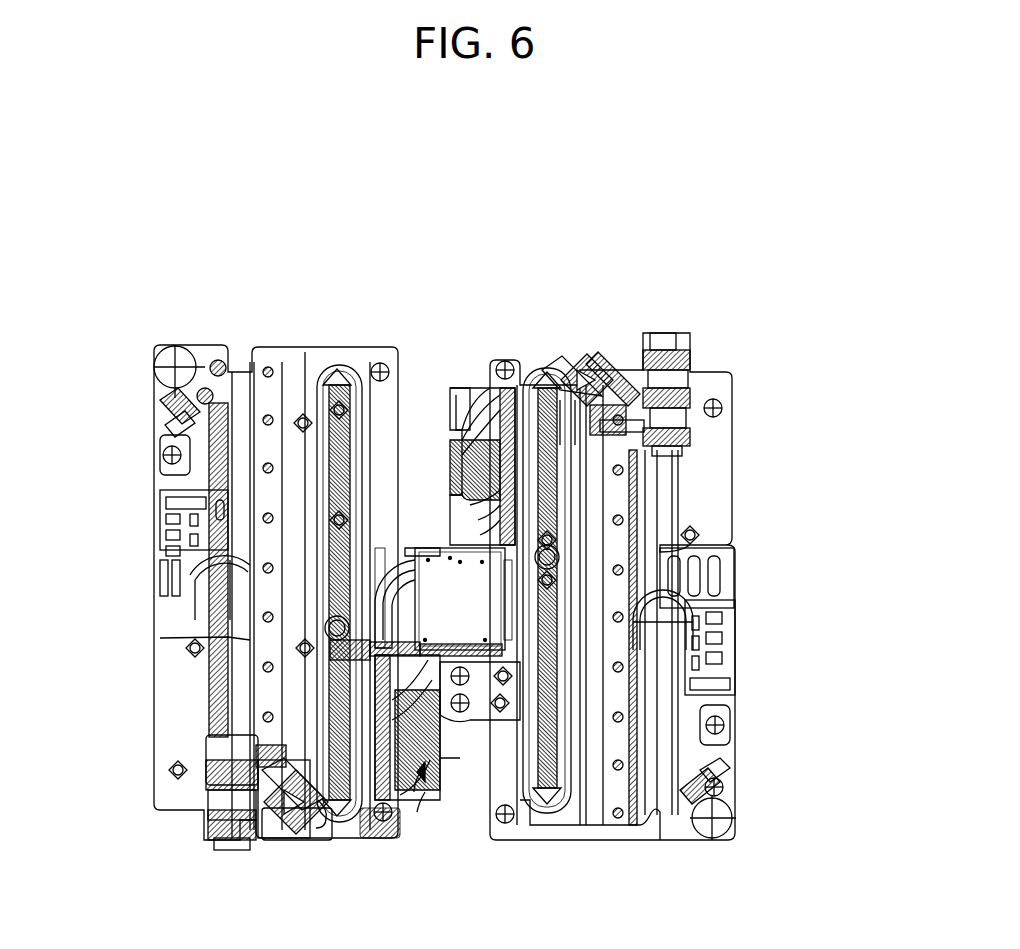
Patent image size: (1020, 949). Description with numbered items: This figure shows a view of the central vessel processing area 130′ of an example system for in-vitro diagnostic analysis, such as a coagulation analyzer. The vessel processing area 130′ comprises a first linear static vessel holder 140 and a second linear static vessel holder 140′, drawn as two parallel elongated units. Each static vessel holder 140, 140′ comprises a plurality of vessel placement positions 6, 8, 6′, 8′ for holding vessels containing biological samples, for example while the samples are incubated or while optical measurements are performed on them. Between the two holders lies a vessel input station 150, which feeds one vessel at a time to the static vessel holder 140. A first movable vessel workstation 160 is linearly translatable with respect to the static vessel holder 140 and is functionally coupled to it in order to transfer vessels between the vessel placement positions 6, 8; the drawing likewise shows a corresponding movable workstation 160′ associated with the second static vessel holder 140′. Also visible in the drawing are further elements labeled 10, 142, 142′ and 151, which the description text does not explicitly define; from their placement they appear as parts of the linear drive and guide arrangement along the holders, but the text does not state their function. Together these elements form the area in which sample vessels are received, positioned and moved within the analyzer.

The apparatus 10 is at (345, 653).
The central vessel processing area 130′ is at (740, 366).
The first linear static vessel holder 140 is at (544, 370).
The second linear static vessel holder 140′ is at (330, 364).
The flexible cable carrier 142 is at (458, 396).
The flexible cable carrier 142′ is at (425, 802).
The vessel input station 150 is at (442, 558).
The slider bar 151 is at (345, 648).
The first movable vessel workstation 160 is at (592, 374).
The motor 160′ is at (278, 822).
The vessel placement position 6 is at (534, 759).
The vessel placement position 8 is at (534, 759).
The vessel placement position 6′ is at (361, 800).
The vessel placement position 8′ is at (361, 800).